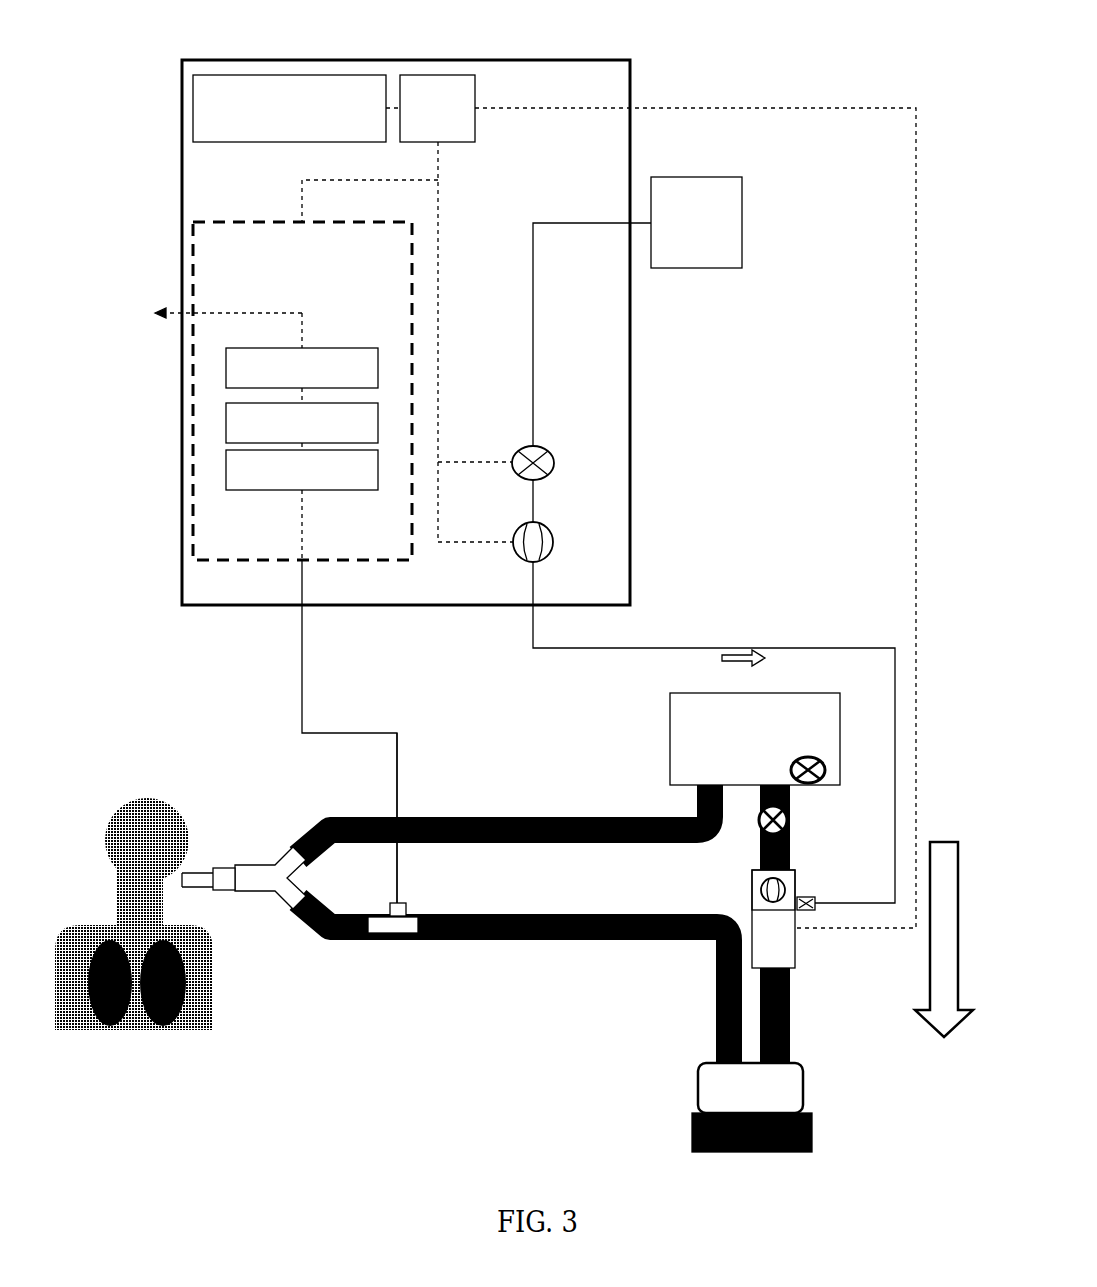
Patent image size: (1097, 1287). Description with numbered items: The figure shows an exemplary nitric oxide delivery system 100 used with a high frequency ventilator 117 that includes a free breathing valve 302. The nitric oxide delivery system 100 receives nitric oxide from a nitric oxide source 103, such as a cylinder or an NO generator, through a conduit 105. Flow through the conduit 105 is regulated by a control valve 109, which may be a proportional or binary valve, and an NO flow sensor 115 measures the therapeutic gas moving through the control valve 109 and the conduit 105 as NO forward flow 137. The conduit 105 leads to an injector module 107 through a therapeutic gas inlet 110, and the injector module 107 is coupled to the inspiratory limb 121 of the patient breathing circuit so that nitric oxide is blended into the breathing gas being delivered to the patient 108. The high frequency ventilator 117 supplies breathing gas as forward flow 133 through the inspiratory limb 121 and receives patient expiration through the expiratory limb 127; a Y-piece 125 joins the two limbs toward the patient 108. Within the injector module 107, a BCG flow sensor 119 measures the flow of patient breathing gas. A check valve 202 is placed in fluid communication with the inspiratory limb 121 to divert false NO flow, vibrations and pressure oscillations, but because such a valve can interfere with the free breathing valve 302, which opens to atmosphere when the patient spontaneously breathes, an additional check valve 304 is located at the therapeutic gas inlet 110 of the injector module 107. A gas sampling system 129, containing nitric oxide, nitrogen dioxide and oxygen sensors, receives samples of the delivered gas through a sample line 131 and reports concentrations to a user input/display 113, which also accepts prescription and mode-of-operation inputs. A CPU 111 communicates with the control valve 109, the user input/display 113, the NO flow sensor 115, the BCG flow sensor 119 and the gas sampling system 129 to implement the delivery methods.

The nitric oxide delivery system 100 is at (313, 46).
The user input/display 113 is at (289, 108).
The CPU 111 is at (609, 501).
The gas sampling system 129 is at (241, 562).
The nitric oxide source 103 is at (696, 222).
The conduit 105 is at (533, 352).
The control valve 109 is at (552, 456).
The NO flow sensor 115 is at (552, 536).
The NO forward flow 137 is at (722, 662).
The high frequency ventilator 117 is at (755, 781).
The free breathing valve 302 is at (826, 768).
The check valve 202 is at (788, 819).
The forward flow 133 is at (947, 840).
The BCG flow sensor 119 is at (763, 885).
The therapeutic gas inlet 110 is at (800, 897).
The check valve 304 is at (815, 900).
The injector module 107 is at (797, 952).
The patient 108 is at (122, 827).
The Y-piece connector 125 is at (260, 870).
The sample line 131 is at (402, 790).
The expiratory limb 127 is at (490, 822).
The inspiratory limb 121 is at (490, 933).